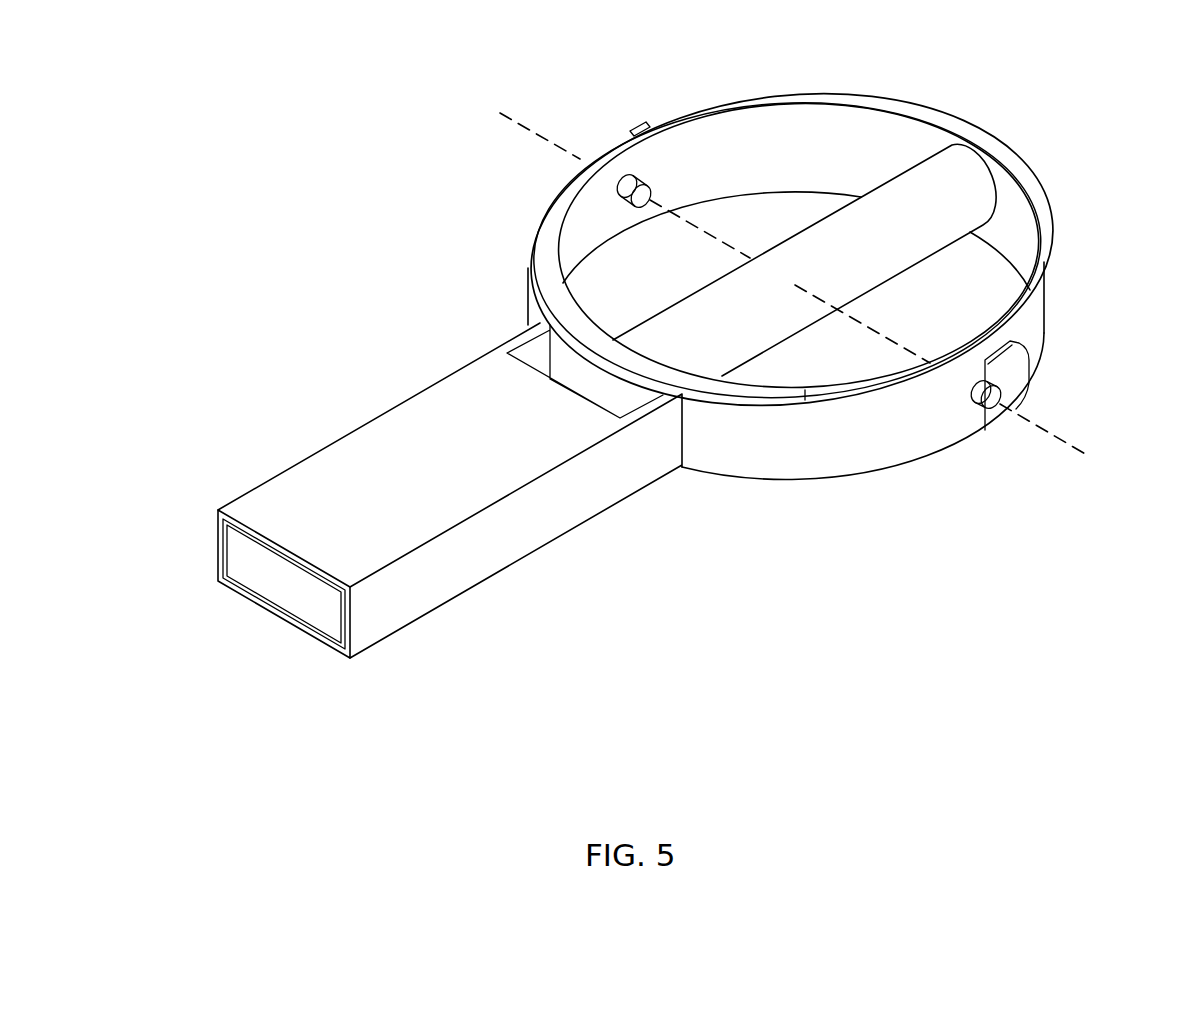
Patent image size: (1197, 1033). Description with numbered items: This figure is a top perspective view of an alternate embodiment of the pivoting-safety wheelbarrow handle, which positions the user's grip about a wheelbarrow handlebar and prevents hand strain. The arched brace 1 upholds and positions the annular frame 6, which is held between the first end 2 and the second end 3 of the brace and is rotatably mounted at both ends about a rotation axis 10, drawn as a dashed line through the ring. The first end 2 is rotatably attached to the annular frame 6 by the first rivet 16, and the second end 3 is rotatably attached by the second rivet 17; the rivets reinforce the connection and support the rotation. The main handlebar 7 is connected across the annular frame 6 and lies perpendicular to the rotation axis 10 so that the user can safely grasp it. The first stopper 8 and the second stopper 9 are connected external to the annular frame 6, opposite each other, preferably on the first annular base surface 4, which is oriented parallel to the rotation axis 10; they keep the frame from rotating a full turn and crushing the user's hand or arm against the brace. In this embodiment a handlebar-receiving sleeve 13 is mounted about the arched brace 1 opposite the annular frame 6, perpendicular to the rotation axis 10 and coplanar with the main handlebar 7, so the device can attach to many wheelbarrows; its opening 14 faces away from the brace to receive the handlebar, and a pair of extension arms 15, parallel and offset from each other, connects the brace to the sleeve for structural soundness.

The arched brace 1 is at (937, 495).
The first end 2 is at (1032, 397).
The second end 3 is at (641, 128).
The first annular base surface 4 is at (1048, 240).
The annular frame 6 is at (812, 120).
The main handlebar 7 is at (912, 258).
The first stopper 8 is at (633, 352).
The second stopper 9 is at (1008, 150).
The rotation axis 10 is at (1087, 455).
The handlebar-receiving sleeve 13 is at (318, 452).
The opening 14 is at (268, 600).
The pair of extension arms 15 is at (517, 333).
The first rivet 16 is at (991, 408).
The second rivet 17 is at (633, 176).